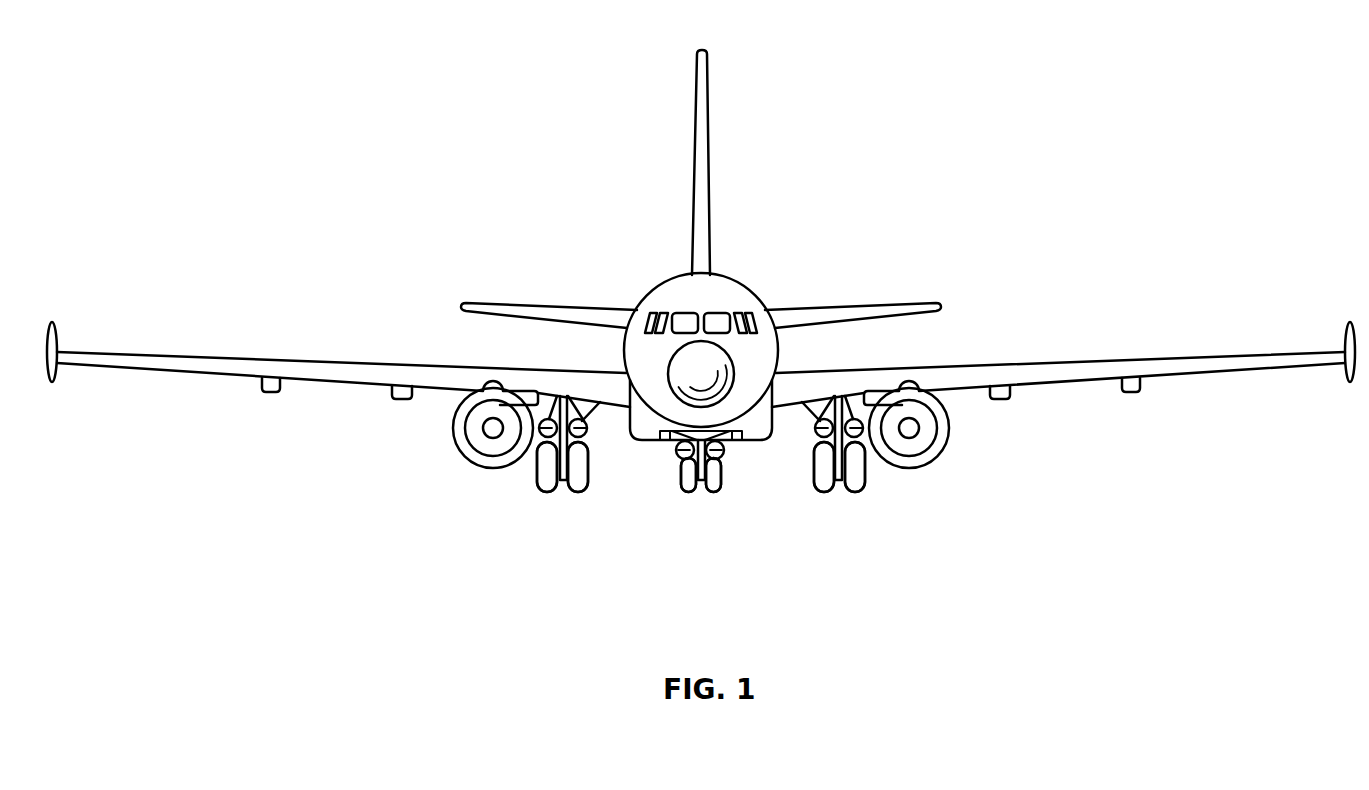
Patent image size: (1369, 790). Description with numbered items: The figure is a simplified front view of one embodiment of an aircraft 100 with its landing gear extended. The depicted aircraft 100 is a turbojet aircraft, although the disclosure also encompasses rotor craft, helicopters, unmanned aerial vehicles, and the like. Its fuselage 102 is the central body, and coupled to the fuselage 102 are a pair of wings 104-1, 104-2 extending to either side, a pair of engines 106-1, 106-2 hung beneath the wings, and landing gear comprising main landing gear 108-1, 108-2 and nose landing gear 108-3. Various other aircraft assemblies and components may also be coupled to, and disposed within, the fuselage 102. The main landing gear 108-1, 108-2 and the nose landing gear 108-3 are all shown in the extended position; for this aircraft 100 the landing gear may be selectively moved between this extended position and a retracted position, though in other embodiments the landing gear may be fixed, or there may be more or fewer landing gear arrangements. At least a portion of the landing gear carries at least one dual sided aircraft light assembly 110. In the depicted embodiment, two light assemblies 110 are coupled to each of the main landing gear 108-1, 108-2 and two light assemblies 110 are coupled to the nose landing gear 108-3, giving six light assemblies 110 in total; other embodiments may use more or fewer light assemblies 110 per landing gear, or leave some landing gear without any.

The aircraft 100 is at (236, 80).
The fuselage 102 is at (728, 302).
The wing 104-1 is at (1198, 367).
The wing 104-2 is at (165, 366).
The engine 106-1 is at (942, 432).
The engine 106-2 is at (460, 432).
The main landing gear 108-1 is at (845, 522).
The main landing gear 108-2 is at (559, 522).
The nose landing gear 108-3 is at (707, 522).
The dual sided aircraft light assembly 110 is at (547, 434).